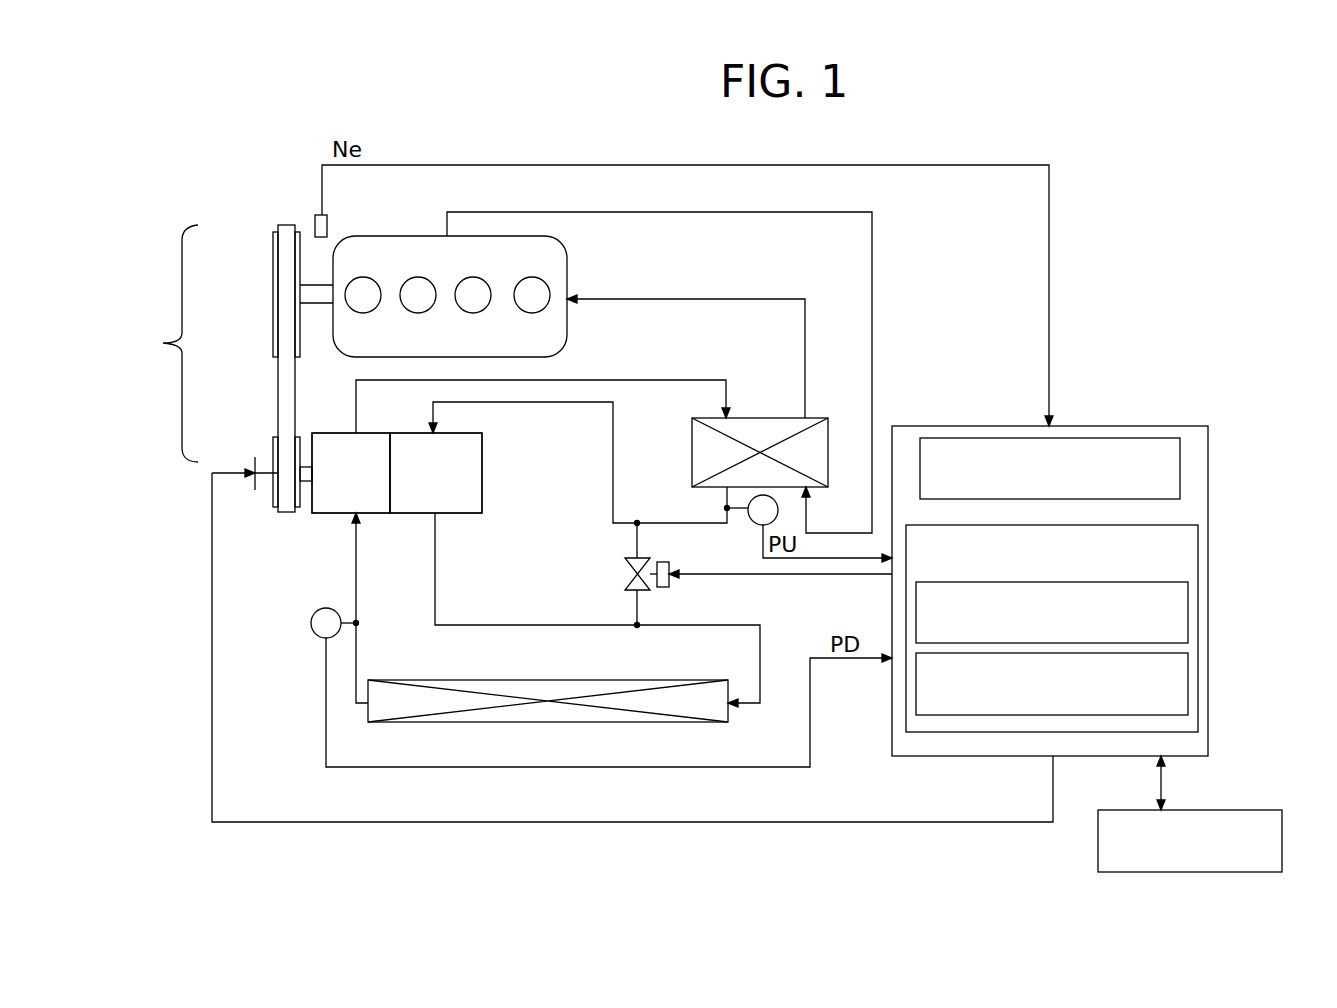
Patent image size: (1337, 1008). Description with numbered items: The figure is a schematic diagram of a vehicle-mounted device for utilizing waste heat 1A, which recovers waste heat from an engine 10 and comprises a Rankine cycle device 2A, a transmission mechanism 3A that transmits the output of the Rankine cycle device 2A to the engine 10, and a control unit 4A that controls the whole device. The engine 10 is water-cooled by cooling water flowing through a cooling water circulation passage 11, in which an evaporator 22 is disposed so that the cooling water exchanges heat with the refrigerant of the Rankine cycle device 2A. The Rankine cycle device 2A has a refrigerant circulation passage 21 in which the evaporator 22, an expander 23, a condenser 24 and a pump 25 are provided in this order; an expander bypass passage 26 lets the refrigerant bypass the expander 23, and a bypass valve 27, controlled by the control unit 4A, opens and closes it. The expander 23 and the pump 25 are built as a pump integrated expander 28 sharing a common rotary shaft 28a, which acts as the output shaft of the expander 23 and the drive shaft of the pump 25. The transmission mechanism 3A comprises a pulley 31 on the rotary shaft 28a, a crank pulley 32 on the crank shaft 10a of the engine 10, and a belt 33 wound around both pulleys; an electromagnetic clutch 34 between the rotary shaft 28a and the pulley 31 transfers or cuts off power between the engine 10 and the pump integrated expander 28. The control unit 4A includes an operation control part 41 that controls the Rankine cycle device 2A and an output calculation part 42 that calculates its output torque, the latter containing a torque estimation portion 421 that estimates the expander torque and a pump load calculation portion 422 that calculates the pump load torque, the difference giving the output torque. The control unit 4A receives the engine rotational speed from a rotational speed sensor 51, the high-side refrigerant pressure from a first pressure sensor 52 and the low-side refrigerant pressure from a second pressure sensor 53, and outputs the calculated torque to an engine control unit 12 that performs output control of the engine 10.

The device for utilizing waste heat 1A is at (1085, 176).
The Rankine cycle device 2A is at (300, 735).
The transmission mechanism 3A is at (213, 368).
The control unit 4A is at (1180, 426).
The engine 10 is at (567, 262).
The crank shaft 10a is at (312, 305).
The cooling water circulation passage 11 is at (872, 280).
The engine control unit 12 is at (1222, 810).
The circulation passage 21 is at (632, 380).
The evaporator 22 is at (762, 418).
The expander 23 is at (449, 487).
The condenser 24 is at (560, 680).
The pump 25 is at (366, 487).
The expander bypass passage 26 is at (637, 548).
The bypass valve 27 is at (625, 574).
The pump integrated expander 28 is at (428, 473).
The rotary shaft 28a is at (304, 483).
The pulley 31 is at (274, 445).
The crank pulley 32 is at (274, 263).
The belt 33 is at (280, 383).
The electromagnetic clutch 34 is at (255, 467).
The operation control part 41 is at (1180, 468).
The output calculation part 42 is at (1198, 550).
The torque estimation portion 421 is at (1188, 612).
The pump load calculation portion 422 is at (1188, 682).
The rotational speed sensor 51 is at (315, 217).
The first pressure sensor 52 is at (752, 522).
The second pressure sensor 53 is at (311, 623).